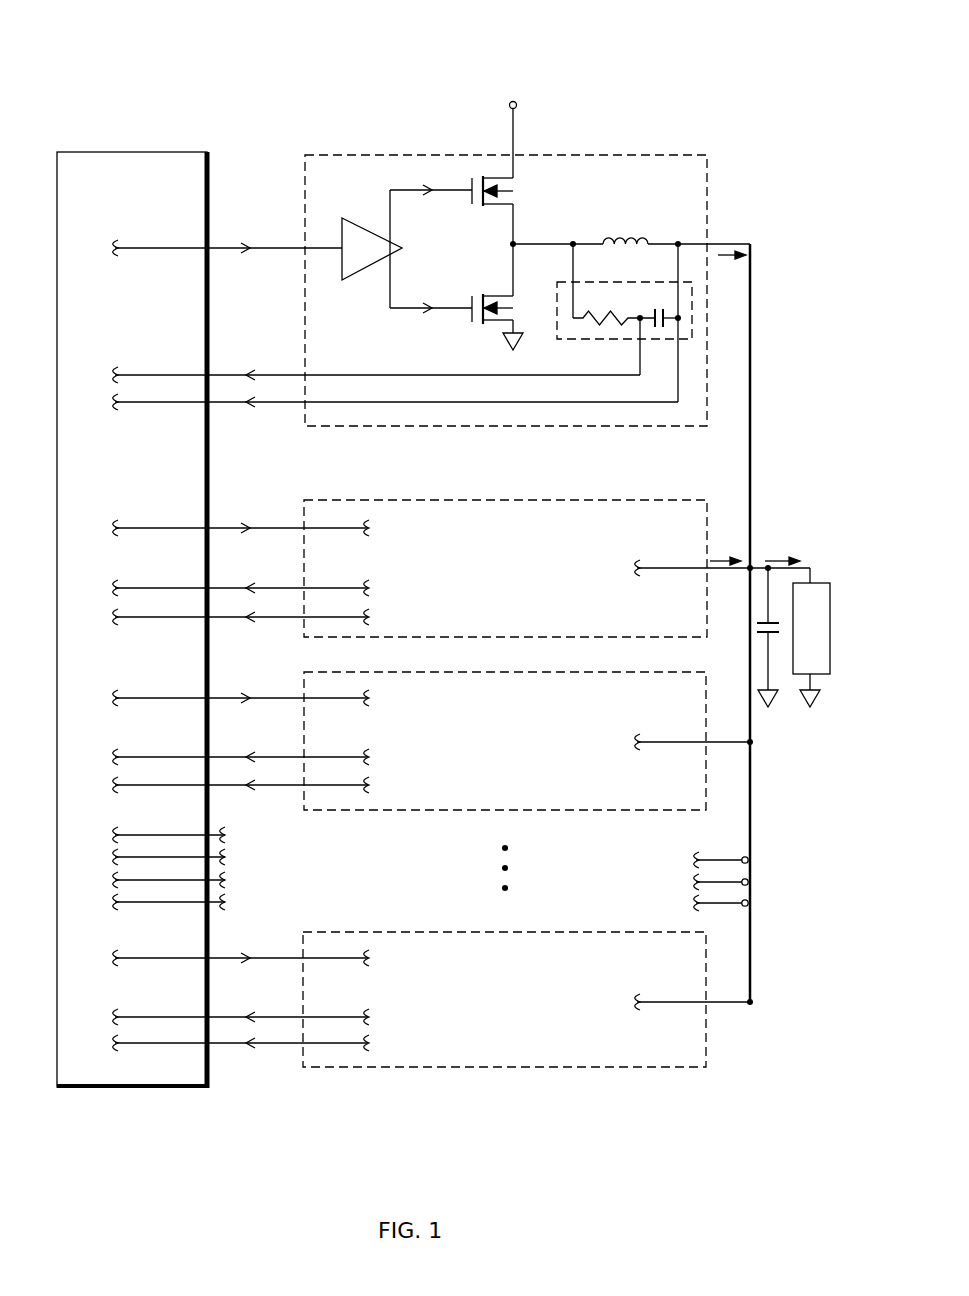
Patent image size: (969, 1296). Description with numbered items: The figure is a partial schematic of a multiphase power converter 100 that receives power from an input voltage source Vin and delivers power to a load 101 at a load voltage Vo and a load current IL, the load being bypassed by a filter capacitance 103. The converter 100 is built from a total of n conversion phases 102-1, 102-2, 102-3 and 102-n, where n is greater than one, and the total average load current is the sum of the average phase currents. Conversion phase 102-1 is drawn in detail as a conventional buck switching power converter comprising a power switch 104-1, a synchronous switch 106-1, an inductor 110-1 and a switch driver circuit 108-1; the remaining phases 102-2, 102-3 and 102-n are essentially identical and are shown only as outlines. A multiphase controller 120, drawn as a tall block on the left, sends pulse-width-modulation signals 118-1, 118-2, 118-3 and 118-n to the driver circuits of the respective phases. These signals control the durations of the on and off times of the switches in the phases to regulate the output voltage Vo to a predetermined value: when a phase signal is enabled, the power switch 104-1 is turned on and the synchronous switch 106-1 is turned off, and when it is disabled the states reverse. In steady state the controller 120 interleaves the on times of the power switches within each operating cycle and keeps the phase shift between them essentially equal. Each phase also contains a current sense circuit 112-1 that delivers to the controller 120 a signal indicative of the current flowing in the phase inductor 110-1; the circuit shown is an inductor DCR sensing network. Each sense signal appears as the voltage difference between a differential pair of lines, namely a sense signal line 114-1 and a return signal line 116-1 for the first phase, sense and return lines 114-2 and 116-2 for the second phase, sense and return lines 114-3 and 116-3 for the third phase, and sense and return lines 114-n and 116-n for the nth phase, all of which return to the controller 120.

The multiphase power converter 100 is at (677, 74).
The load 101 is at (815, 598).
The conversion phase 1 102-1 is at (623, 155).
The conversion phase 2 102-2 is at (625, 500).
The conversion phase 3 102-3 is at (584, 810).
The conversion phase n 102-n is at (584, 932).
The filter capacitance 103 is at (765, 623).
The power switch 104-1 is at (500, 205).
The synchronous switch 106-1 is at (506, 296).
The switch driver circuit 108-1 is at (371, 228).
The inductor 110-1 is at (630, 240).
The current sense circuit 112-1 is at (465, 349).
The sense signal line Isen1 114-1 is at (611, 322).
The return signal line Iret1 116-1 is at (668, 300).
The PWM1 signal 118-1 is at (227, 247).
The sense signal line Isen2 114-2 is at (224, 588).
The return signal line Iret2 116-2 is at (222, 618).
The PWM2 signal 118-2 is at (224, 528).
The sense signal line Isen3 114-3 is at (224, 757).
The return signal line Iret3 116-3 is at (232, 786).
The PWM3 signal 118-3 is at (224, 698).
The sense signal line Isenn 114-n is at (224, 1017).
The return signal line Iretn 116-n is at (222, 1044).
The PWMn signal 118-n is at (234, 958).
The multiphase controller 120 is at (160, 152).